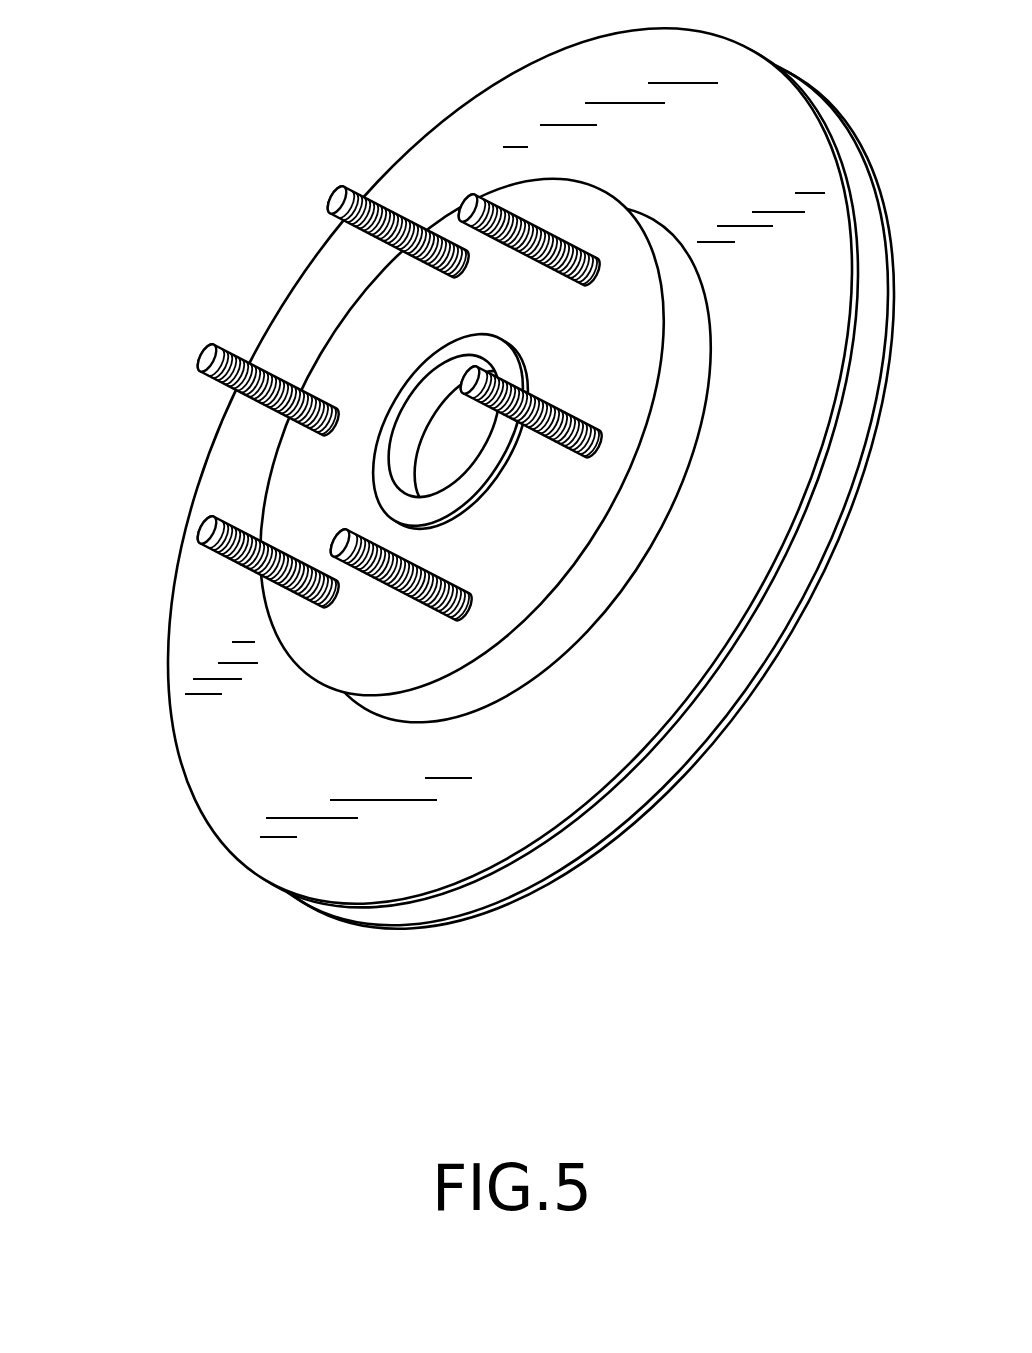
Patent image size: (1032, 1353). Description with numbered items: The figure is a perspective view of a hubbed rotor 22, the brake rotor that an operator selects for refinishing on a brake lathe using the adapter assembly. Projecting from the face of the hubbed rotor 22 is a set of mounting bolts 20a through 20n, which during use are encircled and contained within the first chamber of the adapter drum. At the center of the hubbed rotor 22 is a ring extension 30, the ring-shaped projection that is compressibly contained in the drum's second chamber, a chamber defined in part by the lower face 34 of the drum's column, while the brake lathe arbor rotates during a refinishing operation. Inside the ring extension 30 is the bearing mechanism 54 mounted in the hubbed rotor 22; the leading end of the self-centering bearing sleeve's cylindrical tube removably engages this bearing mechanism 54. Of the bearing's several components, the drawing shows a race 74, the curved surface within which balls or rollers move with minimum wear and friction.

The mounting bolt 20n is at (337, 197).
The mounting bolt 20a is at (205, 530).
The hubbed rotor 22 is at (772, 617).
The lower face 34 is at (503, 833).
The ring extension 30 is at (488, 472).
The bearing mechanism 54 is at (422, 457).
The race 74 is at (447, 415).